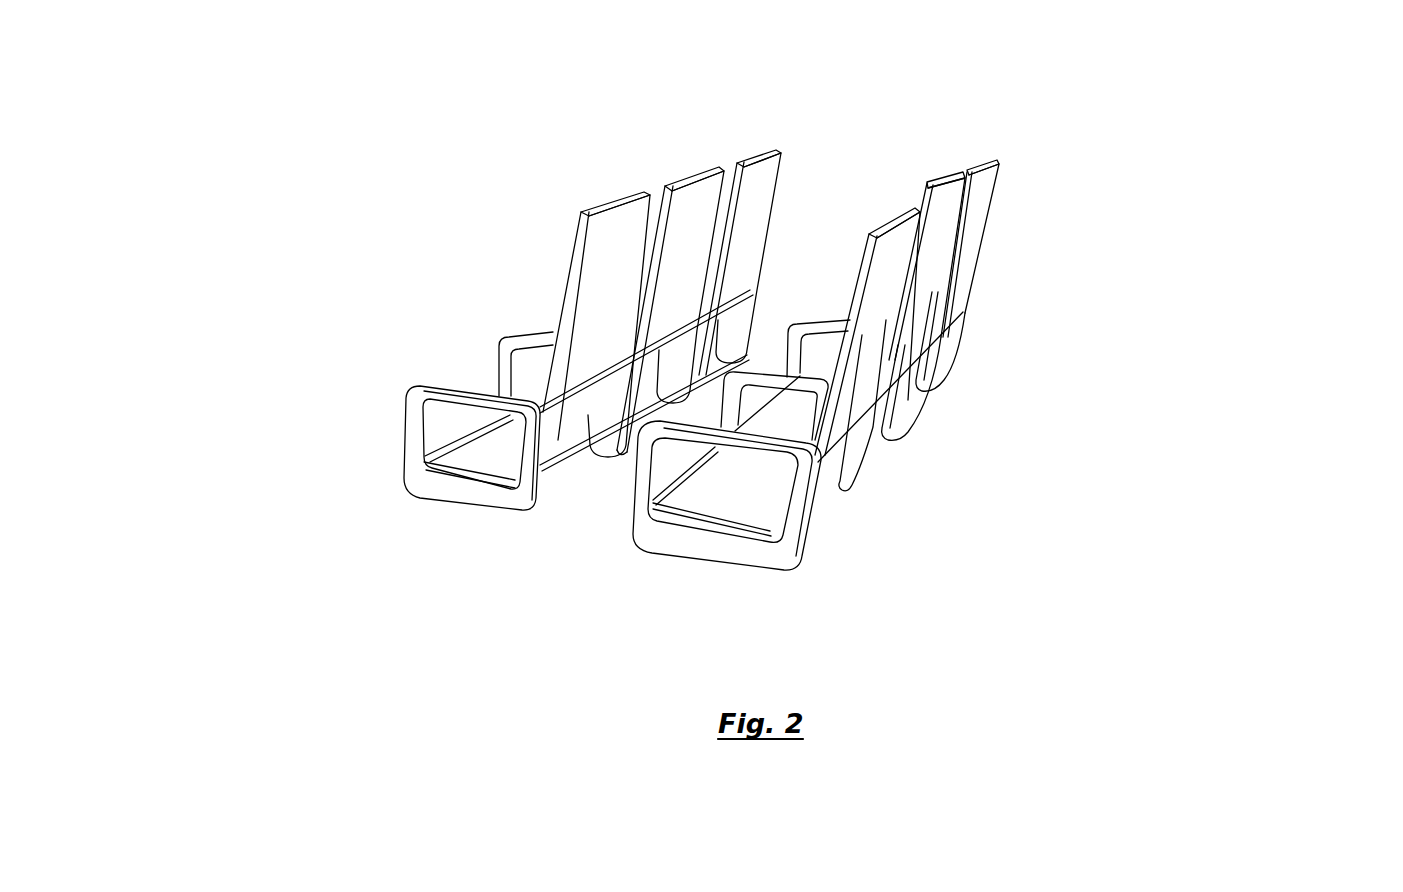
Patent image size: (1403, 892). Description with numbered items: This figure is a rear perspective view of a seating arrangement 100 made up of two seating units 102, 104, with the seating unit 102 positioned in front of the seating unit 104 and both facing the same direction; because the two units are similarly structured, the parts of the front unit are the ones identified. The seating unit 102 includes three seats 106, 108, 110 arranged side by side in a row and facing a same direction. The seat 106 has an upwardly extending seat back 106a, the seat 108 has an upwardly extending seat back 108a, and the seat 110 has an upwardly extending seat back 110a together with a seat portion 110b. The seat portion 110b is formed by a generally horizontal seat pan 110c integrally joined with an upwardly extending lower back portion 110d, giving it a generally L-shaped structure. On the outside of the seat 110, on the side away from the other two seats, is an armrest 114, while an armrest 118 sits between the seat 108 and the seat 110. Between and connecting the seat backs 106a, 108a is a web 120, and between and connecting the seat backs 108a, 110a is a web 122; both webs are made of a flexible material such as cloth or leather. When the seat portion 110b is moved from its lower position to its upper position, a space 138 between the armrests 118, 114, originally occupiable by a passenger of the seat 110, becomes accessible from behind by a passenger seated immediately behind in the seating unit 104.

The seating arrangement 100 is at (1120, 230).
The seating unit 102 is at (513, 500).
The seating unit 104 is at (787, 545).
The seat 106 is at (753, 185).
The seat back 106a is at (745, 263).
The seat 108 is at (695, 202).
The seat back 108a is at (682, 250).
The seat 110 is at (563, 298).
The seat back 110a is at (605, 228).
The seat portion 110b is at (487, 452).
The seat pan 110c is at (442, 452).
The lower back portion 110d is at (568, 433).
The armrest 114 is at (410, 440).
The armrest 118 is at (530, 338).
The web 120 is at (725, 185).
The web 122 is at (655, 185).
The space 138 is at (468, 440).